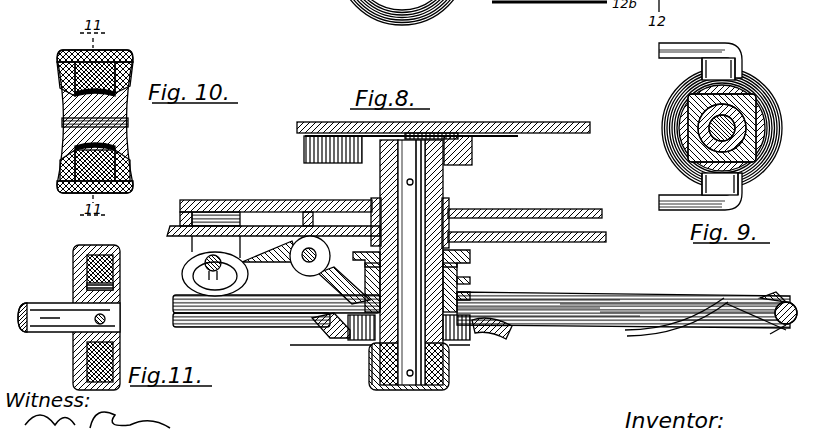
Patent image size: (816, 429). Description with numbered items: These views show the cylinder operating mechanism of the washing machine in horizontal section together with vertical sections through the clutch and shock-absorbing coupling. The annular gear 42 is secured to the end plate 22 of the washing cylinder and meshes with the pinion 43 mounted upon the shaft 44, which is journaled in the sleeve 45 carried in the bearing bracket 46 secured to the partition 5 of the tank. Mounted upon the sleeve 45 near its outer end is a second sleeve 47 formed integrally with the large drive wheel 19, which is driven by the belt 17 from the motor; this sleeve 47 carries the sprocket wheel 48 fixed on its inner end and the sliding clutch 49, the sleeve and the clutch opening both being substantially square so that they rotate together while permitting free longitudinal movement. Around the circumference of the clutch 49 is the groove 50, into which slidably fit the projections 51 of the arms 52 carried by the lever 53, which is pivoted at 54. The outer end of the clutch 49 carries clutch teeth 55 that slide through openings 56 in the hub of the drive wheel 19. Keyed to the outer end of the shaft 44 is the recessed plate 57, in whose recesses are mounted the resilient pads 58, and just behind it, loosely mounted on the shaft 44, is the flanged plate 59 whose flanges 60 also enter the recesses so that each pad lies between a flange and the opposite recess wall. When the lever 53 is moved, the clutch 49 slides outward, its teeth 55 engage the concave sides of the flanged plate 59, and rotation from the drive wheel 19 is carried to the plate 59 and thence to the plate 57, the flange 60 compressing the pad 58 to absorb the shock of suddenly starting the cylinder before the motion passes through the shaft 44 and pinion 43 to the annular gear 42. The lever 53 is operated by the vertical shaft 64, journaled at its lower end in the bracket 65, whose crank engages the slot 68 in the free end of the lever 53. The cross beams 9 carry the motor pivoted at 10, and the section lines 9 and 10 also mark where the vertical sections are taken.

In FIG. 8, the partition 5 is at (178, 231).
In FIG. 8, the cross beams 9 is at (490, 294).
In FIG. 8, the pivot 10 is at (478, 373).
In FIG. 8, the belt 17 is at (780, 301).
In FIG. 8, the drive wheel 19 is at (660, 306).
In FIG. 8, the end plate 22 is at (527, 122).
In FIG. 8, the annular gear 42 is at (334, 160).
In FIG. 8, the pinion 43 is at (455, 174).
In FIG. 10, the shaft 44 is at (63, 137).
In FIG. 11, the shaft 44 is at (36, 333).
In FIG. 9, the shaft 44 is at (694, 131).
In FIG. 8, the shaft 44 is at (405, 206).
In FIG. 9, the sleeve 45 is at (679, 116).
In FIG. 8, the sleeve 45 is at (449, 207).
In FIG. 8, the bearing bracket 46 is at (552, 231).
In FIG. 9, the sleeve 47 is at (700, 149).
In FIG. 8, the sleeve 47 is at (461, 279).
In FIG. 8, the sprocket wheel 48 is at (456, 252).
In FIG. 9, the sliding clutch 49 is at (708, 170).
In FIG. 8, the sliding clutch 49 is at (461, 295).
In FIG. 9, the groove 50 is at (755, 85).
In FIG. 9, the projections 51 is at (700, 71).
In FIG. 9, the arms 52 is at (680, 45).
In FIG. 8, the lever 53 is at (306, 272).
In FIG. 8, the pivot 54 is at (306, 250).
In FIG. 8, the clutch teeth 55 is at (345, 338).
In FIG. 8, the openings 56 is at (348, 326).
In FIG. 10, the recessed plate 57 is at (62, 105).
In FIG. 11, the recessed plate 57 is at (120, 346).
In FIG. 8, the recessed plate 57 is at (436, 391).
In FIG. 10, the resilient pads 58 is at (115, 53).
In FIG. 11, the resilient pads 58 is at (75, 260).
In FIG. 11, the flanged plate 59 is at (76, 288).
In FIG. 8, the flanged plate 59 is at (370, 352).
In FIG. 10, the flanges 60 is at (58, 70).
In FIG. 8, the vertical shaft 64 is at (217, 282).
In FIG. 8, the bracket 65 is at (196, 250).
In FIG. 8, the slot 68 is at (205, 277).